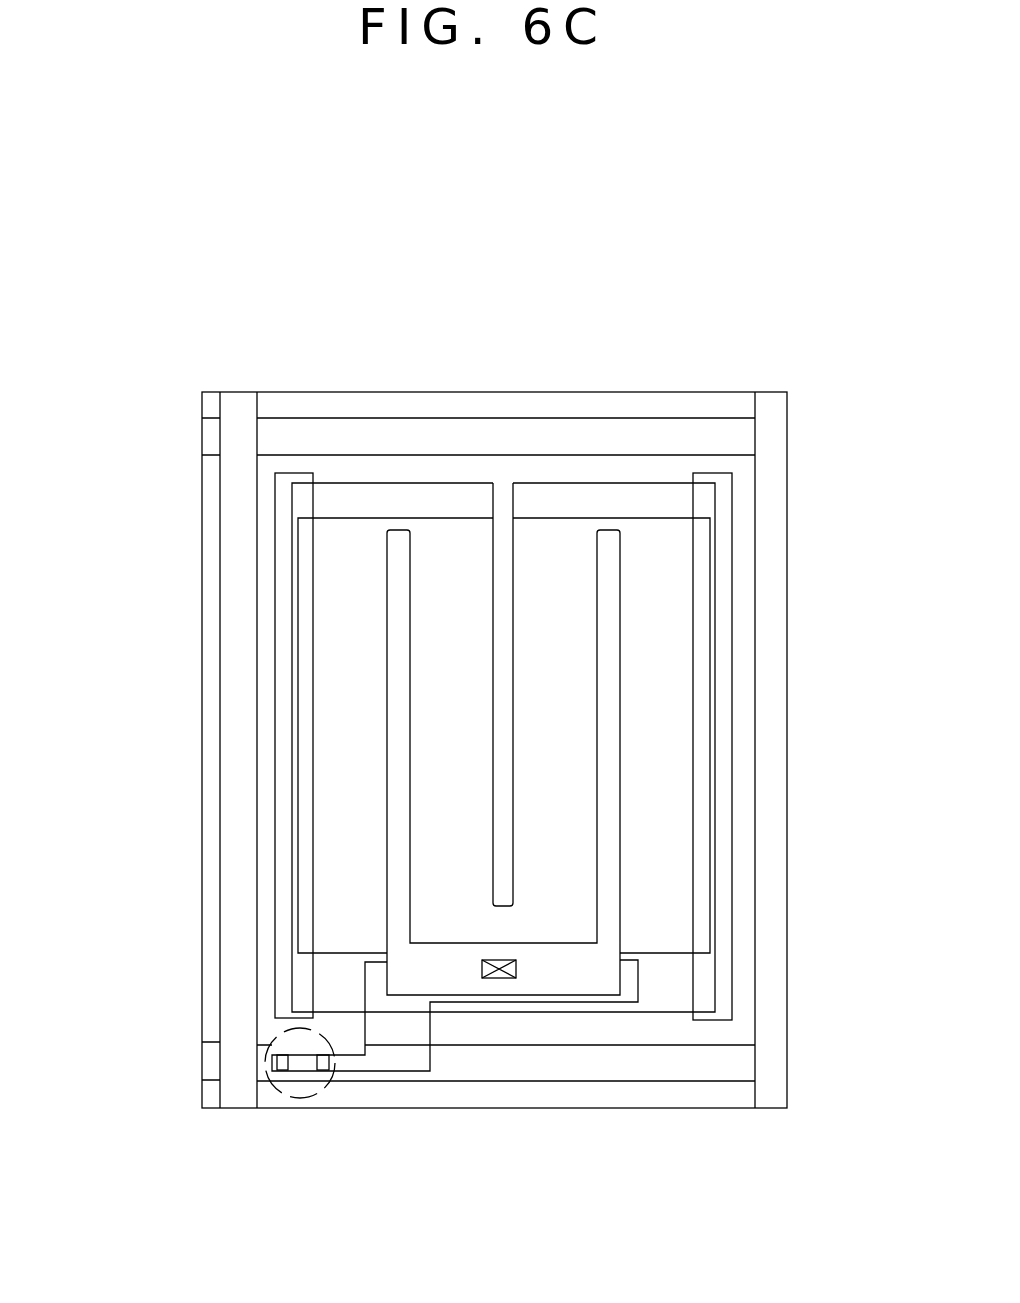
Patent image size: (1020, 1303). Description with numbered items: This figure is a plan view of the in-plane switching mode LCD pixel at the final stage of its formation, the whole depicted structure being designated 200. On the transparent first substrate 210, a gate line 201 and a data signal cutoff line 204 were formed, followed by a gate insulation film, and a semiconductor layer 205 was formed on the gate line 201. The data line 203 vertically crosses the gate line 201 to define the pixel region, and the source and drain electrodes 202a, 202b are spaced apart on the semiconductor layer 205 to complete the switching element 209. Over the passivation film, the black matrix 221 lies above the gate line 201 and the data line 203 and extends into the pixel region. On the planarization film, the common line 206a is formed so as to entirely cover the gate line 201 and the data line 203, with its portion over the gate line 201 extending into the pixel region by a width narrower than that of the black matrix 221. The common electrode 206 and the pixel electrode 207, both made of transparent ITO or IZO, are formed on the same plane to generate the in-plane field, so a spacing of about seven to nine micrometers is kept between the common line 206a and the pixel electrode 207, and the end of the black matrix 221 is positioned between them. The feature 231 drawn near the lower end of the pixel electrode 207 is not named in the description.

The pixel structure 200 is at (186, 437).
The gate line 201 is at (581, 1068).
The source electrode 202a is at (282, 1071).
The drain electrode 202b is at (322, 1072).
The data line 203 is at (238, 1090).
The data signal cutoff line 204 is at (306, 532).
The semiconductor layer 205 is at (300, 1068).
The common electrode 206 is at (505, 538).
The common line 206a is at (552, 470).
The pixel electrode 207 is at (398, 547).
The switching element 209 is at (262, 1036).
The first substrate 210 is at (655, 392).
The black matrix 221 is at (468, 503).
The contact hole 231 is at (498, 979).